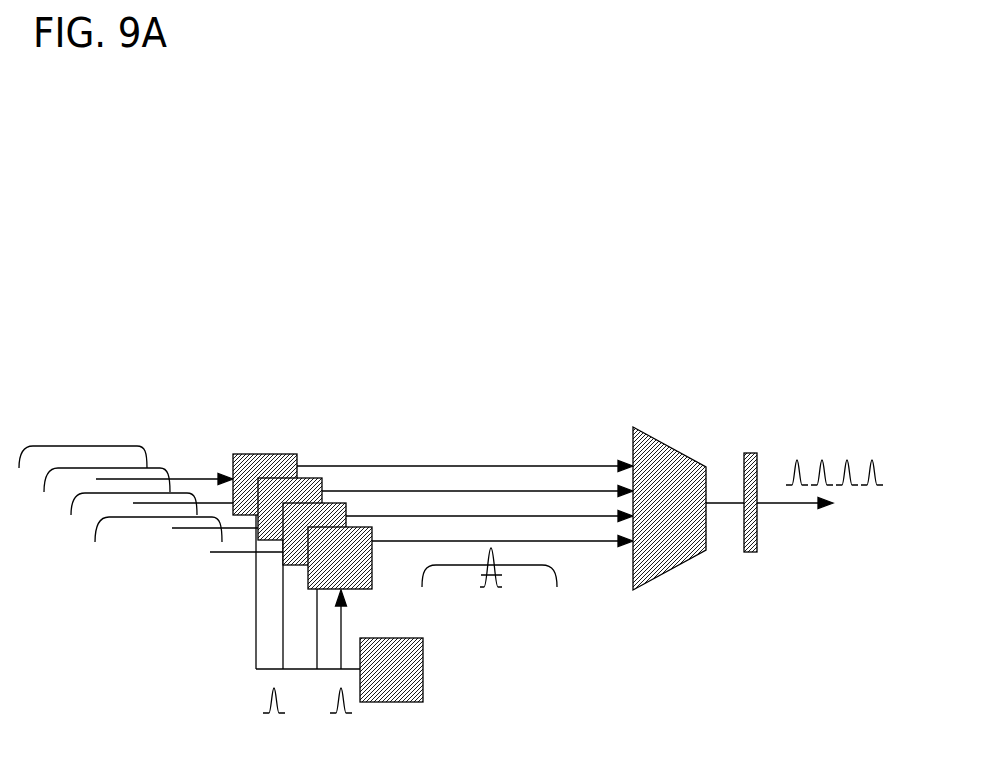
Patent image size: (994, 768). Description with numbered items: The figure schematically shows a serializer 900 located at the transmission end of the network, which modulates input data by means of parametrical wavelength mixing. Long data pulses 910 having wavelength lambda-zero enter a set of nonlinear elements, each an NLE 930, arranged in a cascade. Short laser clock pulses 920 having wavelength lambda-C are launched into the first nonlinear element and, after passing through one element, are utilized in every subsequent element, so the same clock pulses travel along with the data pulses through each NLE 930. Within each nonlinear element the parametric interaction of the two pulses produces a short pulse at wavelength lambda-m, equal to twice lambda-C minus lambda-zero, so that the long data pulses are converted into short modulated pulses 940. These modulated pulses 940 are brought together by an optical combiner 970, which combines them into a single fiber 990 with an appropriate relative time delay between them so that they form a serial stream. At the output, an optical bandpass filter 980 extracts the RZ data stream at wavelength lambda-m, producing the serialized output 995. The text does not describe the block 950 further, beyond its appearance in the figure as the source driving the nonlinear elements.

The serializer 900 is at (704, 663).
The long data pulses 910 is at (101, 446).
The short laser clock pulses 920 is at (265, 703).
The NLE 930 is at (357, 527).
The modulated pulses 940 is at (562, 466).
The pulse generator 950 is at (423, 662).
The optical combiner 970 is at (672, 448).
The output optical bandpass filter 980 is at (750, 452).
The single fiber 990 is at (725, 525).
The output pulse train 995 is at (797, 503).